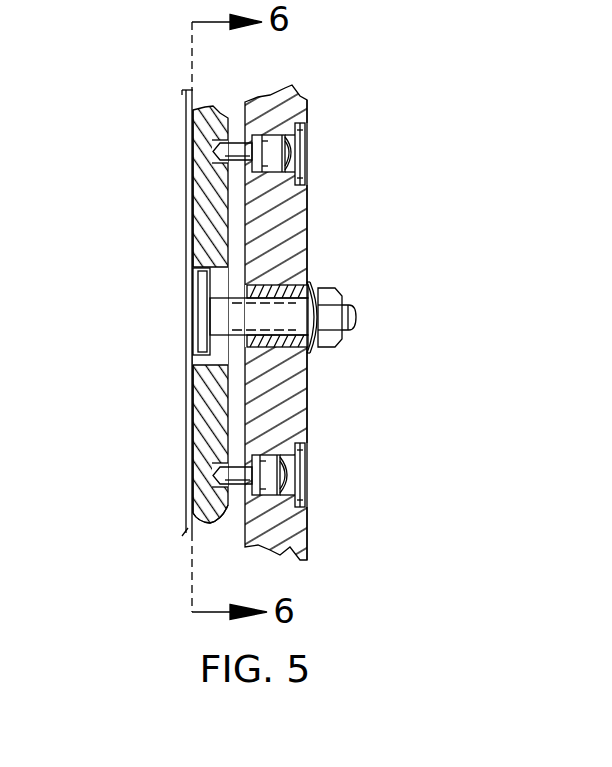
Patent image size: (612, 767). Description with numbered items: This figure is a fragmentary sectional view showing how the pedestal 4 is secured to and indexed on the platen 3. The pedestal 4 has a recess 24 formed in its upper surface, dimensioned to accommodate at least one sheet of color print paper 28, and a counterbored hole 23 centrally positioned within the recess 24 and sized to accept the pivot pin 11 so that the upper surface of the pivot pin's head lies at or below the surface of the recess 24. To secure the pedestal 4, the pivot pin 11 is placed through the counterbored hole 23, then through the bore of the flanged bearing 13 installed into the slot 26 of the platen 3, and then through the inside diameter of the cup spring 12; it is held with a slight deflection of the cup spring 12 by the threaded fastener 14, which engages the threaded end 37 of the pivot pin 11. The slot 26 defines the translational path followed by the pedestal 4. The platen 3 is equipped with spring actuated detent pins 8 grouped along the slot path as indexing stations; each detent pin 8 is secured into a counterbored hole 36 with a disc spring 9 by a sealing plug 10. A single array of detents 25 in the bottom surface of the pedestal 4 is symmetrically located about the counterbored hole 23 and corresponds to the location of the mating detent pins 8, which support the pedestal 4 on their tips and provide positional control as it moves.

The platen 3 is at (308, 517).
The pedestal 4 is at (208, 525).
The detent pin 8 is at (290, 145).
The disc spring 9 is at (303, 153).
The sealing plug 10 is at (305, 165).
The pivot pin 11 is at (197, 323).
The cup spring 12 is at (315, 350).
The flanged bearing 13 is at (308, 347).
The threaded fastener 14 is at (335, 290).
The counterbored hole 23 is at (192, 253).
The recess 24 is at (190, 398).
The detents 25 is at (192, 452).
The slot 26 is at (305, 265).
The color print paper 28 is at (187, 190).
The counterbored hole 36 is at (305, 130).
The threaded end 37 is at (357, 323).